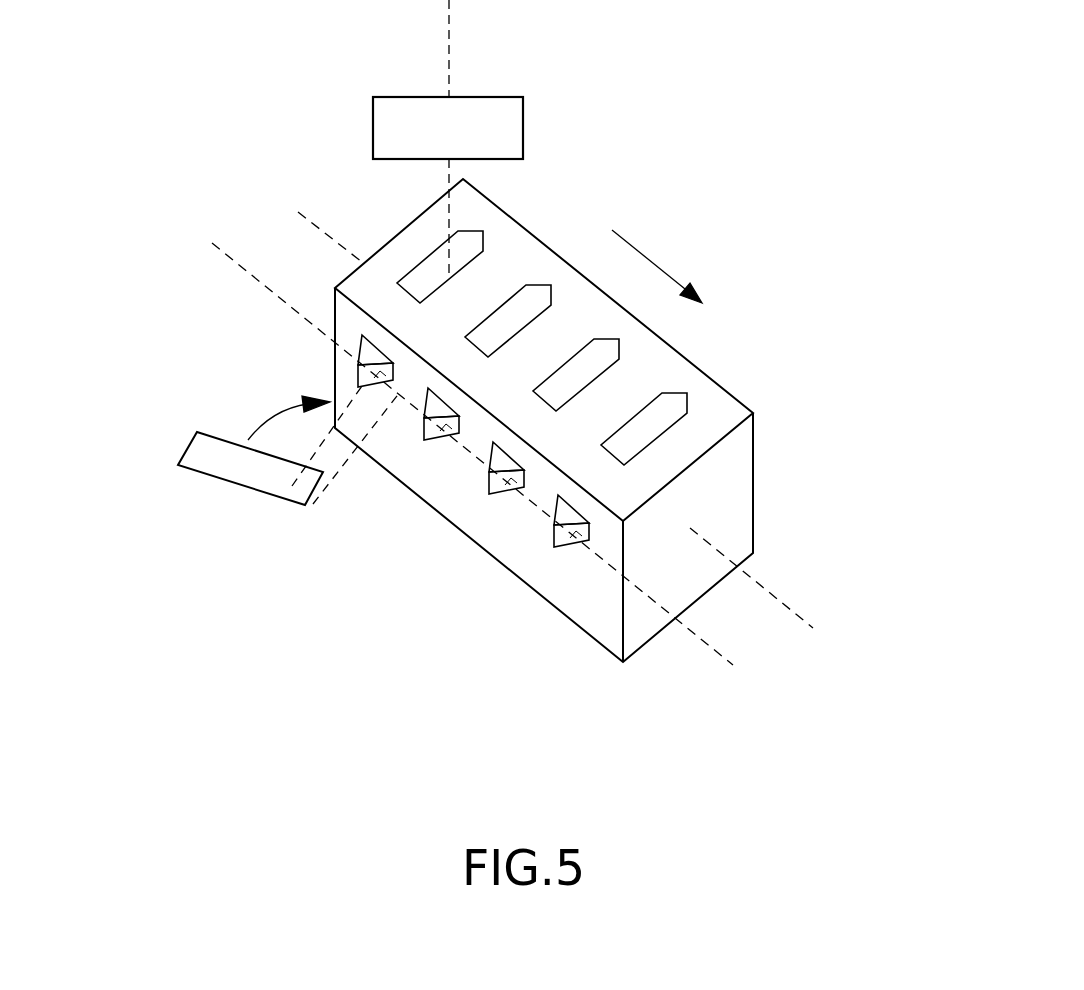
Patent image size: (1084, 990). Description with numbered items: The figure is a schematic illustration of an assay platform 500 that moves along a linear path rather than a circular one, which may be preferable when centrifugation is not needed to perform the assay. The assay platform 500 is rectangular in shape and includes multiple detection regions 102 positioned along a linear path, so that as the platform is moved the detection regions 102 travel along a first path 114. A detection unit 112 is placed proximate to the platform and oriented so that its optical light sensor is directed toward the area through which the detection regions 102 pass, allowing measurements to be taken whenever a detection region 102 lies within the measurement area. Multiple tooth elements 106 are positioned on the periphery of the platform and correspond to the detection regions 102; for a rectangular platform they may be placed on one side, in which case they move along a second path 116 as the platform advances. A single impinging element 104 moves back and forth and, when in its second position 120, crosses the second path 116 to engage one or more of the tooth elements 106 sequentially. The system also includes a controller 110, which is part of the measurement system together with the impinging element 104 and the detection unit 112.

The assay platform 500 is at (718, 382).
The detection regions 102 is at (483, 236).
The tooth elements 106 is at (365, 355).
The detection unit 112 is at (523, 108).
The first path 114 is at (788, 610).
The second path 116 is at (720, 652).
The second position 120 is at (347, 458).
The controller 110 is at (224, 471).
The impinging element 104 is at (208, 467).